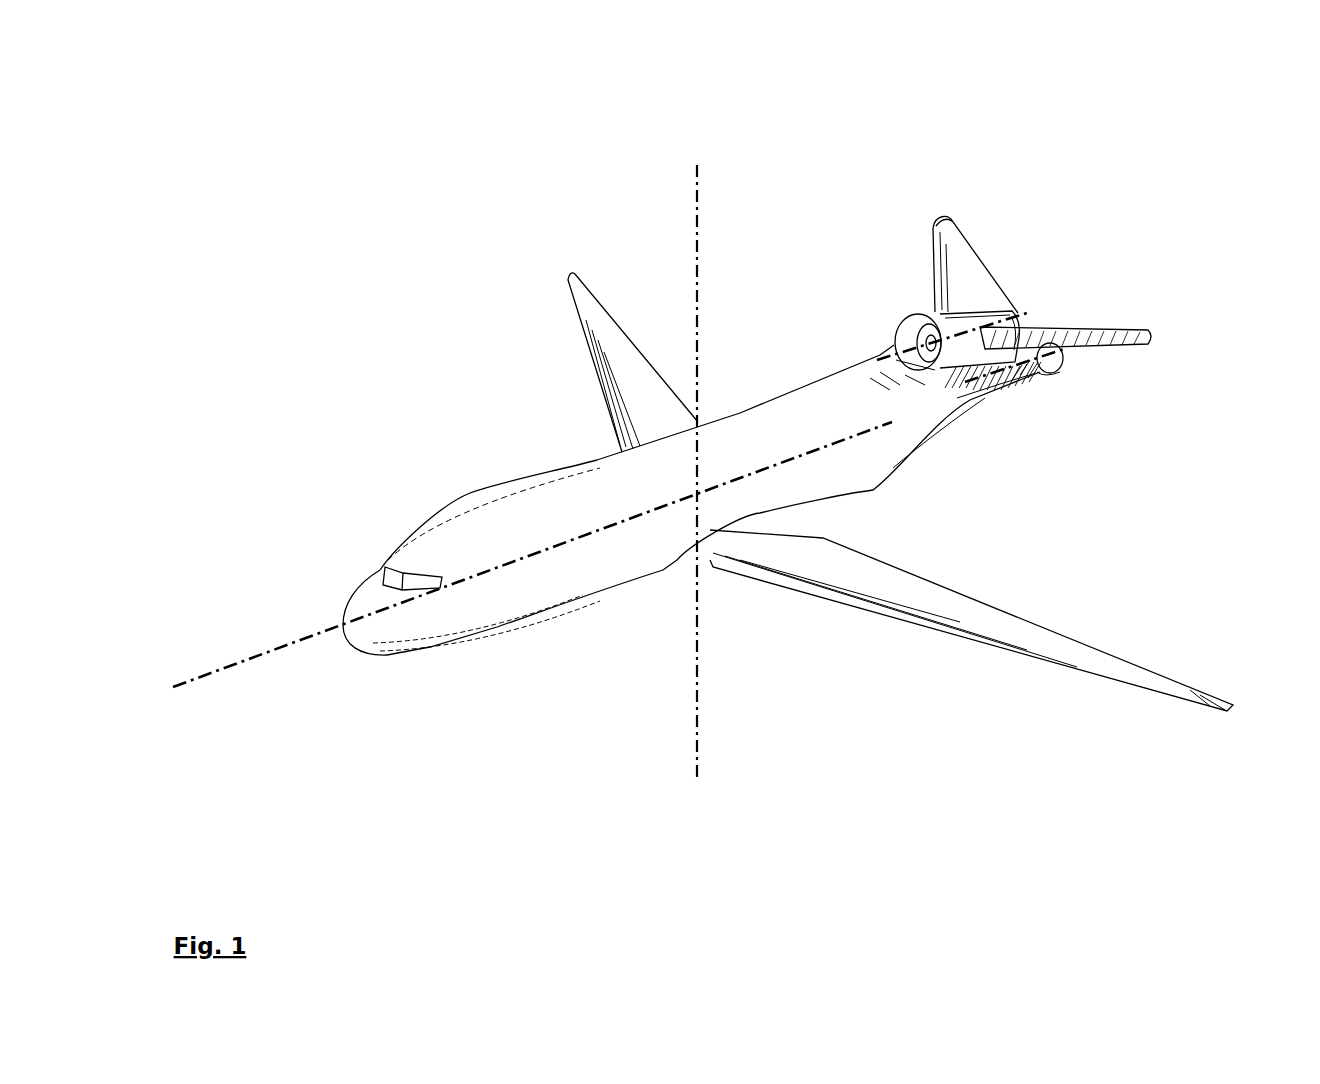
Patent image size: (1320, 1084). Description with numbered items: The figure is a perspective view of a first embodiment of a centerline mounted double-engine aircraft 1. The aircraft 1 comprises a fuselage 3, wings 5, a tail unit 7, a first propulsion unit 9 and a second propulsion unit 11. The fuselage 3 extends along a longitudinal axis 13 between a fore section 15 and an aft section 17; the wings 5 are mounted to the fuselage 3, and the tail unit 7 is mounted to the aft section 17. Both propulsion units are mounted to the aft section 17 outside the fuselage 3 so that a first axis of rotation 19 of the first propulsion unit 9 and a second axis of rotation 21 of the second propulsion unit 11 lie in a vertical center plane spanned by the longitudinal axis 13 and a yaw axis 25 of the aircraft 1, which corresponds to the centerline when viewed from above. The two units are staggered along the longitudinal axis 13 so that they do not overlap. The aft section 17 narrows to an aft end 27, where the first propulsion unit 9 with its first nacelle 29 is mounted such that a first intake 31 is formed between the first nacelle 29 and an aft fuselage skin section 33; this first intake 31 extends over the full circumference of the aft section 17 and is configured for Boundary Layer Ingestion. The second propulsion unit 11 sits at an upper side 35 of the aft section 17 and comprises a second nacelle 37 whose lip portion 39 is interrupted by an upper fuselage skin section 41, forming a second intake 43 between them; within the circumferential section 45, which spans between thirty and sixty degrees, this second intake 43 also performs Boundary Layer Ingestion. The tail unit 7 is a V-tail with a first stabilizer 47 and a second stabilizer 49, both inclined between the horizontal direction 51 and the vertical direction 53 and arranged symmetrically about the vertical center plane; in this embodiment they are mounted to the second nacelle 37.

The aircraft 1 is at (360, 232).
The fuselage 3 is at (593, 482).
The wings 5 is at (1088, 664).
The tail unit 7 is at (1028, 268).
The first propulsion unit 9 is at (1050, 370).
The second propulsion unit 11 is at (957, 332).
The longitudinal axis 13 is at (287, 643).
The fore section 15 is at (400, 630).
The aft section 17 is at (972, 402).
The first axis of rotation 19 is at (1067, 352).
The second axis of rotation 21 is at (1032, 311).
The yaw axis 25 is at (694, 323).
The aft end 27 is at (1012, 376).
The first nacelle 29 is at (1040, 367).
The first intake 31 is at (1002, 374).
The aft fuselage skin section 33 is at (996, 378).
The upper side 35 is at (981, 292).
The second nacelle 37 is at (942, 318).
The lip portion 39 is at (937, 367).
The upper fuselage skin section 41 is at (892, 380).
The second intake 43 is at (932, 358).
The circumferential section 45 is at (910, 370).
The first stabilizer 47 is at (1092, 333).
The second stabilizer 49 is at (953, 232).
The horizontal direction 51 is at (571, 925).
The vertical direction 53 is at (571, 925).